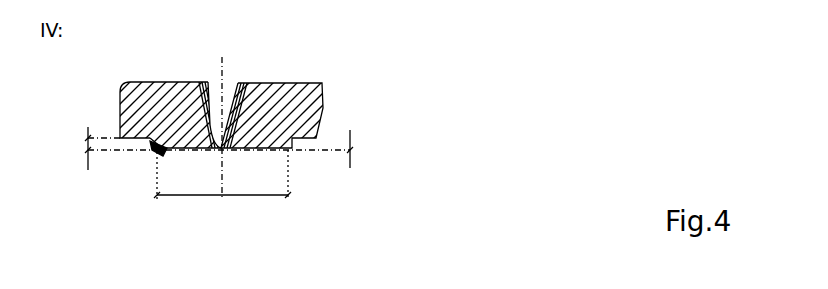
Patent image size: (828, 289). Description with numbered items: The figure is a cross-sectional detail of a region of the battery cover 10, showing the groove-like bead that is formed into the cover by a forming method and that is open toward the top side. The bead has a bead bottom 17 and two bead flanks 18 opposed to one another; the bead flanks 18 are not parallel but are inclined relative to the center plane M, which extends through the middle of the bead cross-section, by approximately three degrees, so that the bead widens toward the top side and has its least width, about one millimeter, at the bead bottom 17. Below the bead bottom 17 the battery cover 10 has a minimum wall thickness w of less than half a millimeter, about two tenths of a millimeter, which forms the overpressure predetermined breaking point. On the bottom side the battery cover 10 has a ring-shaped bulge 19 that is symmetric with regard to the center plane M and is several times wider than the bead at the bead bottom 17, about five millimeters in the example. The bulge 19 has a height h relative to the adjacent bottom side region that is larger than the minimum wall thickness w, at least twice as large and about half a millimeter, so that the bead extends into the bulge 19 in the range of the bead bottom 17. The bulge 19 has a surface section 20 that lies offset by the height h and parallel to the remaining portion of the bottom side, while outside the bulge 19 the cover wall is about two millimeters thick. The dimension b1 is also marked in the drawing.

The battery cover 10 is at (322, 83).
The bead bottom 17 is at (222, 146).
The bead flanks 18 is at (212, 95).
The bulge 19 is at (177, 147).
The surface section 20 is at (158, 155).
The center plane M is at (222, 198).
The height h is at (86, 143).
The minimum wall thickness w is at (352, 147).
The groove width dimension b1 is at (222, 175).